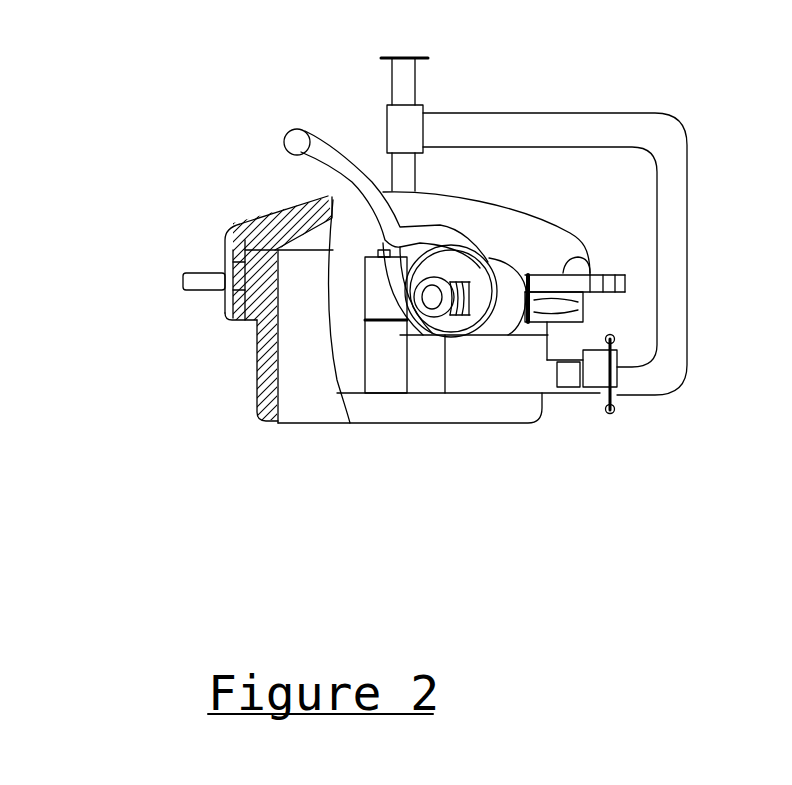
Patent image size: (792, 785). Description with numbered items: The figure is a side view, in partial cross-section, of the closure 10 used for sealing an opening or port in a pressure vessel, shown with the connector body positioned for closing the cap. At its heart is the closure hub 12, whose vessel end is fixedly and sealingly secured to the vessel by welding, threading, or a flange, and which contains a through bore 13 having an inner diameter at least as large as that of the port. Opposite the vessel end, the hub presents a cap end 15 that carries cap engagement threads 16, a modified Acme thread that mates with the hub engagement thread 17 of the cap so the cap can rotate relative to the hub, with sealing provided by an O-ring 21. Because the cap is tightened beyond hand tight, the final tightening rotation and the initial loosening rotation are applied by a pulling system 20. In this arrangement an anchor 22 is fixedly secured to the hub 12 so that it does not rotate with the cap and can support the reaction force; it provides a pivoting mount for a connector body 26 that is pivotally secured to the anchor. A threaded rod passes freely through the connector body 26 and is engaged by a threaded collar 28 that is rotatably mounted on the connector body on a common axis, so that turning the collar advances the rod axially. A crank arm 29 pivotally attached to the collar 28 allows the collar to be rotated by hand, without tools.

The closure 10 is at (518, 477).
The closure hub 12 is at (253, 397).
The through bore 13 is at (457, 407).
The cap end 15 is at (250, 323).
The cap engagement threads 16 is at (240, 268).
The hub engagement thread 17 is at (328, 226).
The pulling system 20 is at (622, 262).
The O-ring 21 is at (245, 222).
The anchor 22 is at (386, 321).
The connector body 26 is at (507, 305).
The threaded collar 28 is at (455, 326).
The crank arm 29 is at (296, 141).